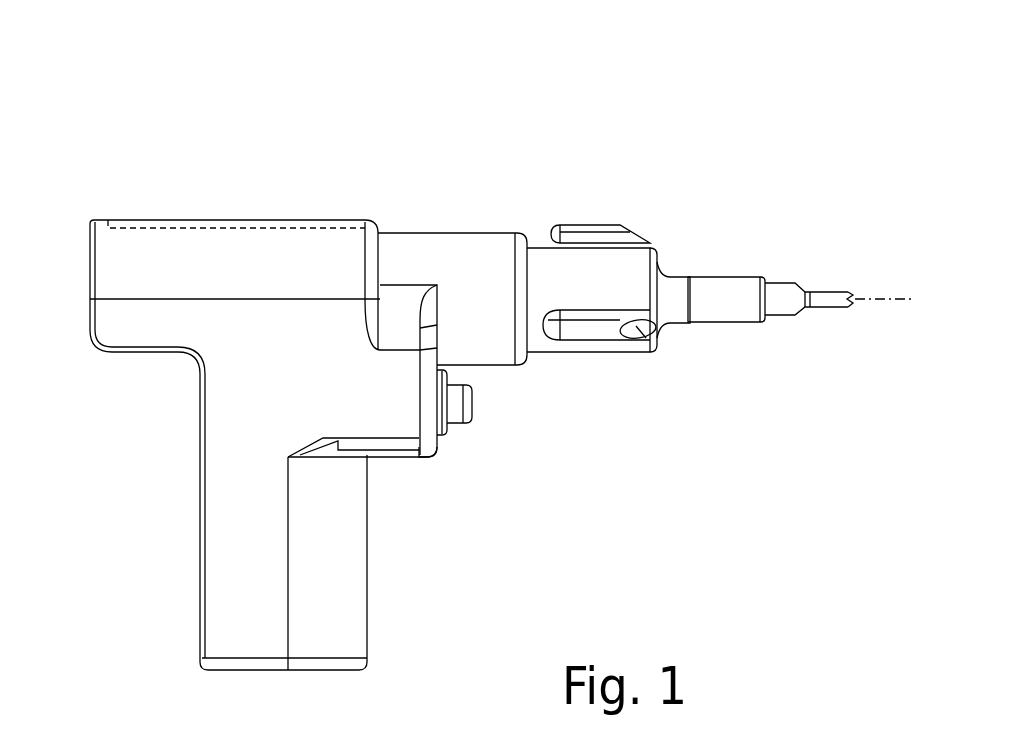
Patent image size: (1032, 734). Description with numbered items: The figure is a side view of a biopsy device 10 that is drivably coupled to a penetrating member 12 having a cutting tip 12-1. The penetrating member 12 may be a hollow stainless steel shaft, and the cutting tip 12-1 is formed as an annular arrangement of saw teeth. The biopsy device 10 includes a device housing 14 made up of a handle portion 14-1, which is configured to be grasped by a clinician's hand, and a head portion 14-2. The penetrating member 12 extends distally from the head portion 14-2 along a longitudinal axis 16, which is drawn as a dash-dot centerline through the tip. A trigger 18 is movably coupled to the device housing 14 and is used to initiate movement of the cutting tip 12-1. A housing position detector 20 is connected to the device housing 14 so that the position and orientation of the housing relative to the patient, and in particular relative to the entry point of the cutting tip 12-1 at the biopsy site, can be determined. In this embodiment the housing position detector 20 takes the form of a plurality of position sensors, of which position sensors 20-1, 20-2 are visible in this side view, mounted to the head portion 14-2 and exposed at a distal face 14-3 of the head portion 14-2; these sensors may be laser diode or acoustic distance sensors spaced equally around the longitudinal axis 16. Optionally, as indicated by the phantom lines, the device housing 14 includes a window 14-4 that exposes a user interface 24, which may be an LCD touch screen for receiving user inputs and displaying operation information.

The biopsy device 10 is at (790, 120).
The penetrating member 12 is at (817, 283).
The cutting tip 12-1 is at (857, 307).
The device housing 14 is at (266, 138).
The handle portion 14-1 is at (197, 562).
The head portion 14-2 is at (591, 203).
The distal face 14-3 is at (668, 268).
The window 14-4 is at (90, 226).
The longitudinal axis 16 is at (863, 298).
The trigger 18 is at (455, 425).
The housing position detector 20 is at (650, 237).
The position sensor 20-1 is at (602, 228).
The position sensor 20-2 is at (643, 340).
The user interface 24 is at (220, 220).